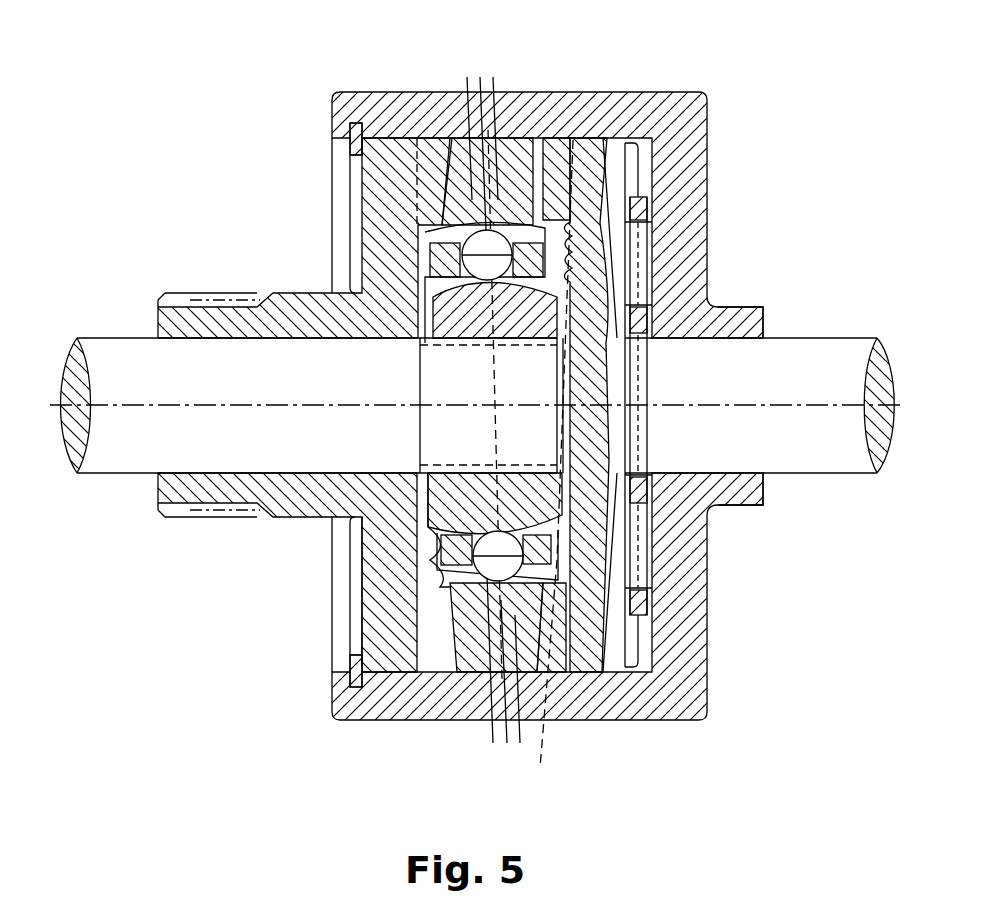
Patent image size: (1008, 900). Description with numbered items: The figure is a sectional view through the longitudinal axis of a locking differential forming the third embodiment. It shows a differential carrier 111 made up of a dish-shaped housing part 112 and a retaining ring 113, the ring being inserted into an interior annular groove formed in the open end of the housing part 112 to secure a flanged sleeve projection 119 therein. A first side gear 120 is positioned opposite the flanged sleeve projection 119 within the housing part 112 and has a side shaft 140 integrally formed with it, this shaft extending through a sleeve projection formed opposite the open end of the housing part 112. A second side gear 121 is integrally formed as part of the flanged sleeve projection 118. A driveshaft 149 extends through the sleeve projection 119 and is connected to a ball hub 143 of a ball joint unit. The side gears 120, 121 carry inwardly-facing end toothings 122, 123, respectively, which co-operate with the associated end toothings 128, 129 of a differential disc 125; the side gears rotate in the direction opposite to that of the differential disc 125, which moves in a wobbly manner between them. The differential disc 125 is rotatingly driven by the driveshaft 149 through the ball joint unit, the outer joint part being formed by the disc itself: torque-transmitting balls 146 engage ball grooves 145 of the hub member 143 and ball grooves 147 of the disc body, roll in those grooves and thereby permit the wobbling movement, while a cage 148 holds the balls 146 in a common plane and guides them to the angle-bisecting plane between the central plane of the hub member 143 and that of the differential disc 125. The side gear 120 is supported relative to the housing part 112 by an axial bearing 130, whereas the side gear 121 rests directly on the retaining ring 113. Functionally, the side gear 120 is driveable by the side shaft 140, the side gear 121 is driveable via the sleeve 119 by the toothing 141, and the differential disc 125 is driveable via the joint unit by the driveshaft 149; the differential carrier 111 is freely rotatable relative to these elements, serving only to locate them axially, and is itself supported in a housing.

The differential carrier 111 is at (726, 110).
The housing part 112 is at (679, 94).
The retaining ring 113 is at (356, 122).
The flanged sleeve projection 118 is at (746, 320).
The flanged sleeve projection 119 is at (286, 312).
The first side gear 120 is at (615, 156).
The second side gear 121 is at (383, 652).
The end toothing 122 is at (562, 154).
The end toothing 123 is at (428, 613).
The differential disc 125 is at (510, 150).
The end toothing 128 is at (530, 466).
The end toothing 129 is at (416, 138).
The axial bearing 130 is at (648, 238).
The side shaft 140 is at (826, 332).
The toothing 141 is at (197, 296).
The ball hub 143 is at (437, 503).
The ball grooves 145 is at (470, 540).
The torque-transmitting balls 146 is at (477, 584).
The ball grooves 147 is at (560, 588).
The cage 148 is at (545, 572).
The driveshaft 149 is at (120, 352).